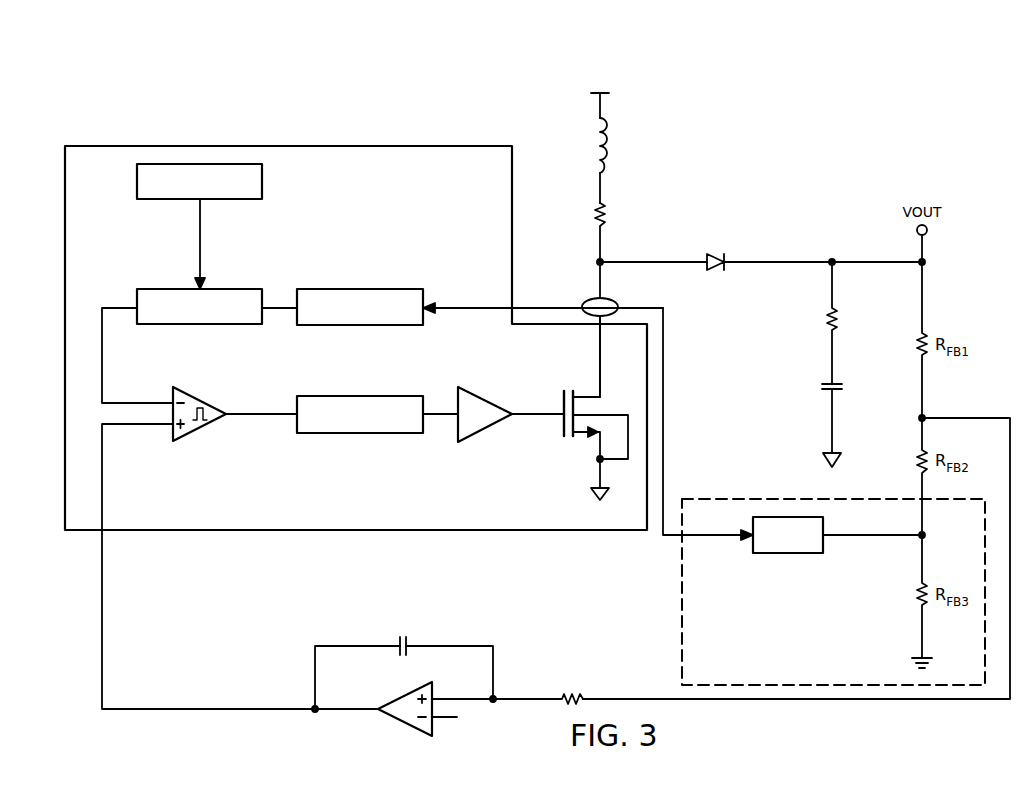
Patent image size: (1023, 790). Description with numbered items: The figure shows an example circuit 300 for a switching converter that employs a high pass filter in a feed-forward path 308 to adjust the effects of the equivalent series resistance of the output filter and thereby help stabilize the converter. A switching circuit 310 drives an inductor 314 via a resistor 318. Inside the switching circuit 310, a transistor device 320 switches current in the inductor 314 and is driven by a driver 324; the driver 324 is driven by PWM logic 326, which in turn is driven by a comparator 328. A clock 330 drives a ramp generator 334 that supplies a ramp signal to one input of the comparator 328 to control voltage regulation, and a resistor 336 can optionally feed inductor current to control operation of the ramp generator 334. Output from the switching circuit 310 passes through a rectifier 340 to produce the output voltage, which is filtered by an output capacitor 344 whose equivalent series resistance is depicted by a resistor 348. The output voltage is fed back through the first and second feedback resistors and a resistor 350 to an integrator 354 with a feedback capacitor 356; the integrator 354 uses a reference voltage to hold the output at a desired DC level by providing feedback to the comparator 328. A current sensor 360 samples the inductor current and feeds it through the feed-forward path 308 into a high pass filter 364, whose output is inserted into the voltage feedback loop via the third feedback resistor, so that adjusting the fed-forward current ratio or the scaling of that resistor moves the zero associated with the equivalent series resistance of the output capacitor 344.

The circuit 300 is at (886, 110).
The feed-forward path 308 is at (770, 498).
The switching circuit 310 is at (184, 146).
The inductor 314 is at (614, 154).
The resistor 318 is at (612, 216).
The transistor device 320 is at (560, 424).
The driver 324 is at (489, 397).
The PWM logic 326 is at (360, 433).
The comparator 328 is at (218, 386).
The clock 330 is at (137, 183).
The ramp generator 334 is at (137, 299).
The resistor 336 is at (358, 288).
The rectifier 340 is at (719, 252).
The output capacitor 344 is at (842, 390).
The resistor 348 is at (840, 321).
The resistor 350 is at (571, 693).
The integrator 354 is at (406, 727).
The feedback capacitor 356 is at (403, 635).
The current sensor 360 is at (592, 301).
The high pass filter 364 is at (837, 557).